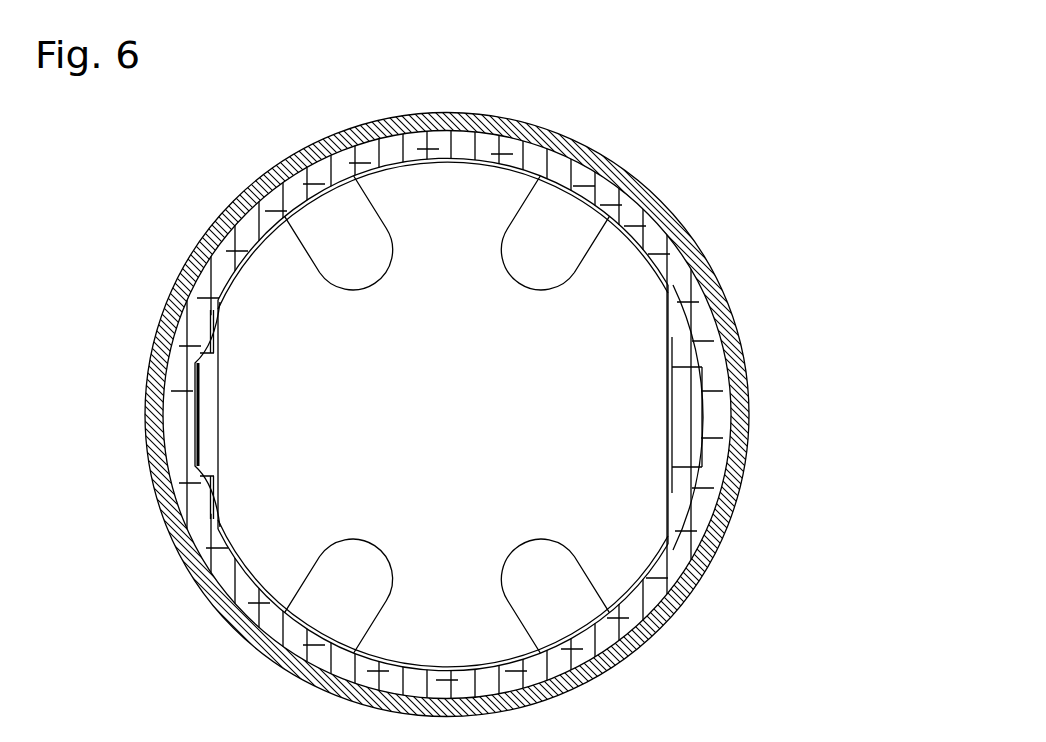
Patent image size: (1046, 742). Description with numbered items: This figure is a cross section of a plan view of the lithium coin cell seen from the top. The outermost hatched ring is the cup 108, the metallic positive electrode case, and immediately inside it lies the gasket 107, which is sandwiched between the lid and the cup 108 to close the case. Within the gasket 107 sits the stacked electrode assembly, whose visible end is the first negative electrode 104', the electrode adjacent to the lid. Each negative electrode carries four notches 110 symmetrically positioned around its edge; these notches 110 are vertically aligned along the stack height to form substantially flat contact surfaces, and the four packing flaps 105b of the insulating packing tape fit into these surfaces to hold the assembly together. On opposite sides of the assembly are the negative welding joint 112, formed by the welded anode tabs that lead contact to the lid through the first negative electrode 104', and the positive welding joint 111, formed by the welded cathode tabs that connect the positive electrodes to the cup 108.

The packing flap 105b is at (553, 232).
The gasket 107 is at (655, 242).
The cup 108 is at (737, 318).
The positive welding joint 111 is at (698, 414).
The first negative electrode 104' is at (554, 416).
The notch 110 is at (623, 605).
The negative welding joint 112 is at (180, 415).